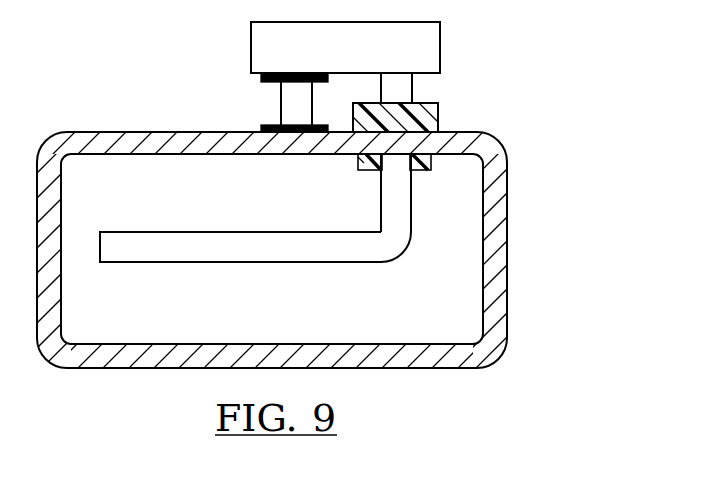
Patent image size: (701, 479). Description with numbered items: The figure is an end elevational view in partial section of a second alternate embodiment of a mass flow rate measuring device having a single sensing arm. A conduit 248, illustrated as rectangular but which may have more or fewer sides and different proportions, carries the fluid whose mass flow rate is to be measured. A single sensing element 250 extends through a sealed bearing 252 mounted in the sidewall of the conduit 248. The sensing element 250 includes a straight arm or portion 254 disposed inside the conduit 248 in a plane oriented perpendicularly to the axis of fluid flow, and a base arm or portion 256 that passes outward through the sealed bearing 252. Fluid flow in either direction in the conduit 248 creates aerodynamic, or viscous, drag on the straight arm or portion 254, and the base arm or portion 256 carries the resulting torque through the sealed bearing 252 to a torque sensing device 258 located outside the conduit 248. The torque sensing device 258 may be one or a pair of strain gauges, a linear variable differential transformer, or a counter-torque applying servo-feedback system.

The conduit 248 is at (507, 185).
The sensing element 250 is at (506, 51).
The sealed bearing 252 is at (430, 121).
The straight arm or portion 254 is at (174, 232).
The base arm or portion 256 is at (411, 199).
The torque sensing device 258 is at (287, 47).